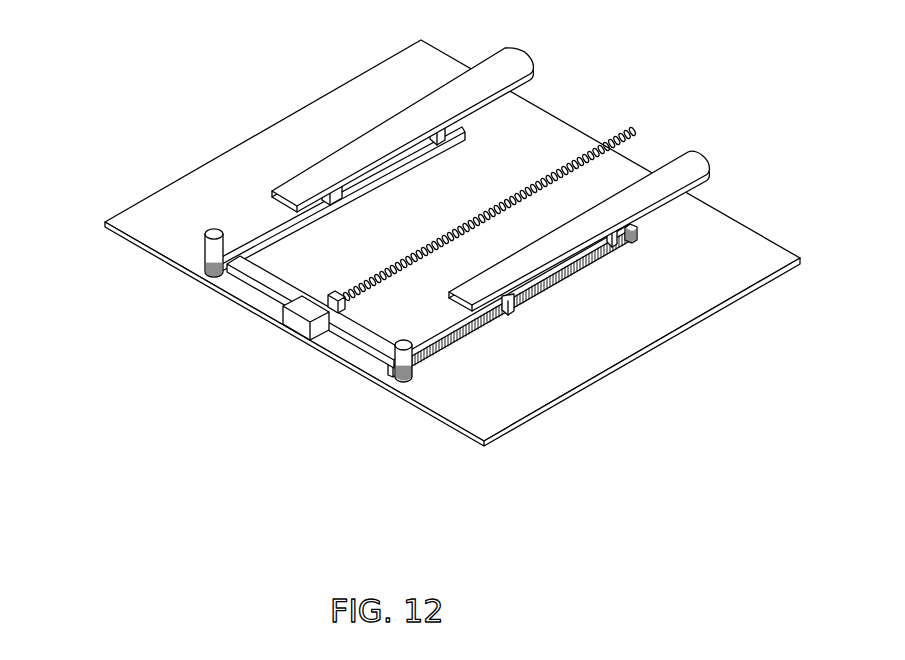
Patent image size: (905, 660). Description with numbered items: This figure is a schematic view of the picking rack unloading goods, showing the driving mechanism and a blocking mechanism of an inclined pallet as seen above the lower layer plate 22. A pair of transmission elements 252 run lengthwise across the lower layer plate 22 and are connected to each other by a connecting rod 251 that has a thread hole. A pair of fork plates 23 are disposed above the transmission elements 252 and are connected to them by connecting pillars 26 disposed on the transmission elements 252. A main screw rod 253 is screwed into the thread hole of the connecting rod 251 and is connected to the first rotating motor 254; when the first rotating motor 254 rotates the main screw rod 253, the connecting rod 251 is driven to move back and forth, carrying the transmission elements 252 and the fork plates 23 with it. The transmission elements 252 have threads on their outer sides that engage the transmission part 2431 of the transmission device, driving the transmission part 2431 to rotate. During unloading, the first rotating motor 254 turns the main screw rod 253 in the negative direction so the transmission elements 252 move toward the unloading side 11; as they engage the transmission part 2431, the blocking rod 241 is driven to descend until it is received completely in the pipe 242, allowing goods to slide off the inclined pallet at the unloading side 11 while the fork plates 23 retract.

The unloading side 11 is at (133, 240).
The lower layer plate 22 is at (328, 118).
The fork plates 23 is at (515, 62).
The connecting pillar 26 is at (633, 240).
The blocking rod 241 is at (134, 258).
The pipe 242 is at (207, 247).
The transmission part 2431 is at (193, 270).
The connecting rod 251 is at (372, 325).
The transmission elements 252 is at (283, 232).
The main screw rod 253 is at (624, 136).
The first rotating motor 254 is at (302, 320).